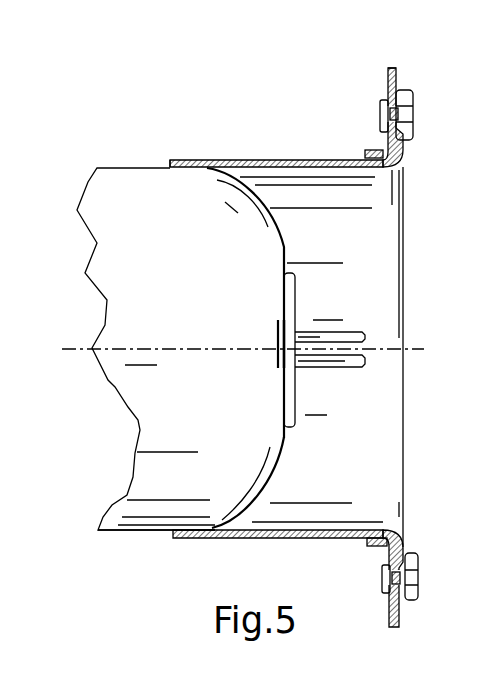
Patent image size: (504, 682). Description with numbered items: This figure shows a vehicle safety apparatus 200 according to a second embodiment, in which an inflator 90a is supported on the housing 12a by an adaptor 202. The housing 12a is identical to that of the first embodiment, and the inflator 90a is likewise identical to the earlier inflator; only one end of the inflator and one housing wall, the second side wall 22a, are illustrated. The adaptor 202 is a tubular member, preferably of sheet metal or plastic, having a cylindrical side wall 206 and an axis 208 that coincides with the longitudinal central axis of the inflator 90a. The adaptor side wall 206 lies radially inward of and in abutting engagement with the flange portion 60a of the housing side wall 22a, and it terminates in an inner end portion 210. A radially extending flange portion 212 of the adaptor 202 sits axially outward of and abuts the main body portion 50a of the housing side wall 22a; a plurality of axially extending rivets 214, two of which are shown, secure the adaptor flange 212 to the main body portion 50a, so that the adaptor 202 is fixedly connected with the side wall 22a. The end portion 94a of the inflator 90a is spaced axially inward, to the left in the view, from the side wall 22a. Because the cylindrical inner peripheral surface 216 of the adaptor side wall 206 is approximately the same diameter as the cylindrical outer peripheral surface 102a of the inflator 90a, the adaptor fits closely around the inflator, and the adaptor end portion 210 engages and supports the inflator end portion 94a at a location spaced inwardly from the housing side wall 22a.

The vehicle safety apparatus 200 is at (198, 72).
The inflator 90a is at (78, 179).
The end portion of the inflator 94a is at (277, 227).
The axis 208 is at (78, 352).
The cylindrical outer peripheral surface 102a is at (143, 533).
The adaptor 202 is at (280, 549).
The cylindrical side wall 206 is at (262, 160).
The inner end portion 210 is at (183, 160).
The cylindrical inner peripheral surface 216 is at (320, 530).
The housing 12a is at (374, 68).
The main body portion 50a is at (397, 70).
The flange portion 212 is at (401, 545).
The second side wall 22a is at (376, 616).
The flange portion 60a is at (379, 150).
The rivets 214 is at (415, 98).